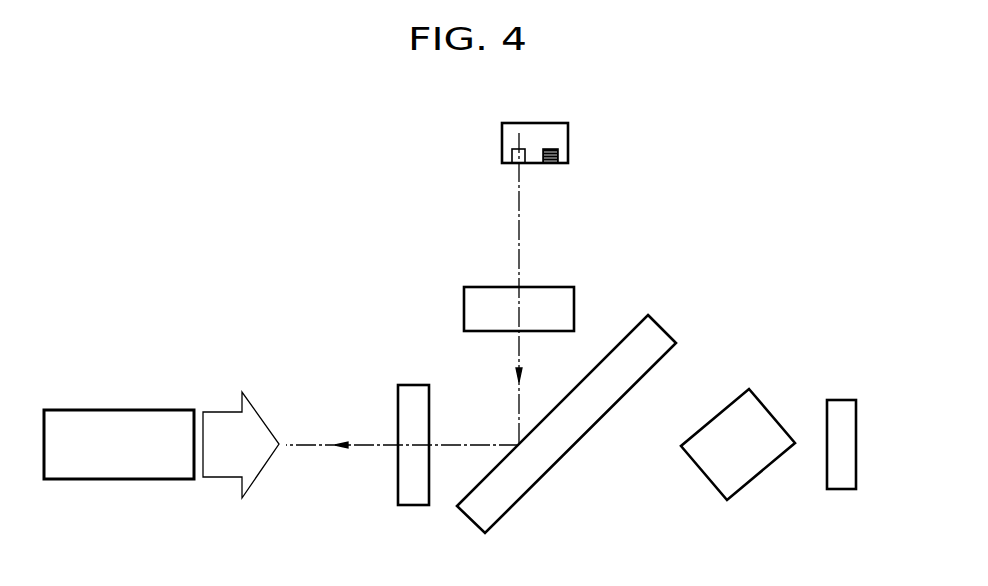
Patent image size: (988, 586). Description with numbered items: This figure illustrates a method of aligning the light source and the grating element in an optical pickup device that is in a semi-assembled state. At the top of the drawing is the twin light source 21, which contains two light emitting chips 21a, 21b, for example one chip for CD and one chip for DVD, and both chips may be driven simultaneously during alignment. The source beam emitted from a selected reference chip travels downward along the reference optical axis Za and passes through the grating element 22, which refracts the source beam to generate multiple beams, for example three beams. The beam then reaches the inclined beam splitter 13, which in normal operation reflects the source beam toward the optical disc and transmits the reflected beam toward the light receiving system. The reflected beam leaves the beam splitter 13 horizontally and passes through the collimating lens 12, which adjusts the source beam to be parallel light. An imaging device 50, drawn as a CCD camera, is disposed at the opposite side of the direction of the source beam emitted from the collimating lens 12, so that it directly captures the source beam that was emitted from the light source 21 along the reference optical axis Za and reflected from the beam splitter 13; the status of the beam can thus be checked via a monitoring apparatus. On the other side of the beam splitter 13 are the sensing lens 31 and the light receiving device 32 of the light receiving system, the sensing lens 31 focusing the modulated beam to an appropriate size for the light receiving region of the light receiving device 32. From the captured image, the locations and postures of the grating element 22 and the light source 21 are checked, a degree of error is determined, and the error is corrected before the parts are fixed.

The light source 21 is at (546, 169).
The light emitting chip 21a is at (517, 164).
The light emitting chip 21b is at (550, 164).
The reference optical axis Za is at (522, 256).
The grating element 22 is at (575, 303).
The beam splitter 13 is at (665, 326).
The collimating lens 12 is at (412, 507).
The imaging device 50 is at (113, 481).
The sensing lens 31 is at (742, 492).
The light receiving device 32 is at (842, 490).